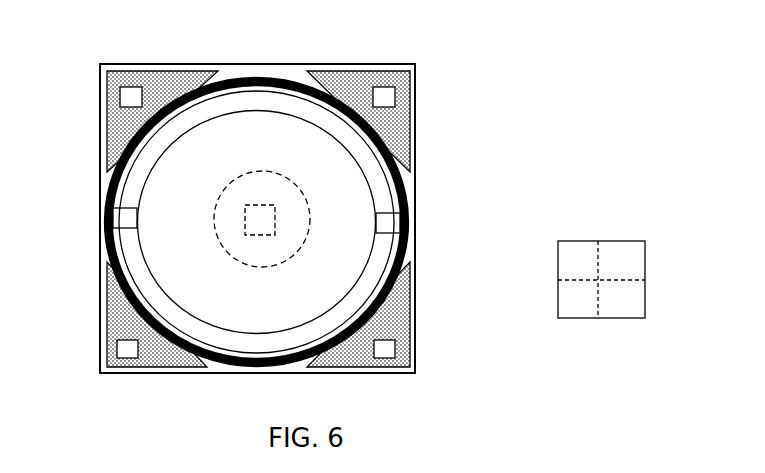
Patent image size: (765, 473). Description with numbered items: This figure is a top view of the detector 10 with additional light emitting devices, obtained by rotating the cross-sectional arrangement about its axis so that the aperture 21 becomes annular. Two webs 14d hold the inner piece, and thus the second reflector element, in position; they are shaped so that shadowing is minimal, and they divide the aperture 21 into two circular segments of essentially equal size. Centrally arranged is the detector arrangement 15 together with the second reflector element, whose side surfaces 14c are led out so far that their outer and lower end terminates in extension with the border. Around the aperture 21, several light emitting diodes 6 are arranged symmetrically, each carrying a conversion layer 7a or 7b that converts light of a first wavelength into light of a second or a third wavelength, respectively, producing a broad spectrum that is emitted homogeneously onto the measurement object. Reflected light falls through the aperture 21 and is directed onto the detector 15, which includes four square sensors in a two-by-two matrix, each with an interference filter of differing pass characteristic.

The substrate holder 10 is at (338, 211).
The aperture 21 is at (285, 107).
The light emitting diodes 6 is at (131, 87).
The conversion layer 7a is at (113, 105).
The conversion layer 7b is at (395, 143).
The side surfaces 14c is at (209, 215).
The webs 14d is at (110, 220).
The detector arrangement 15 is at (278, 223).